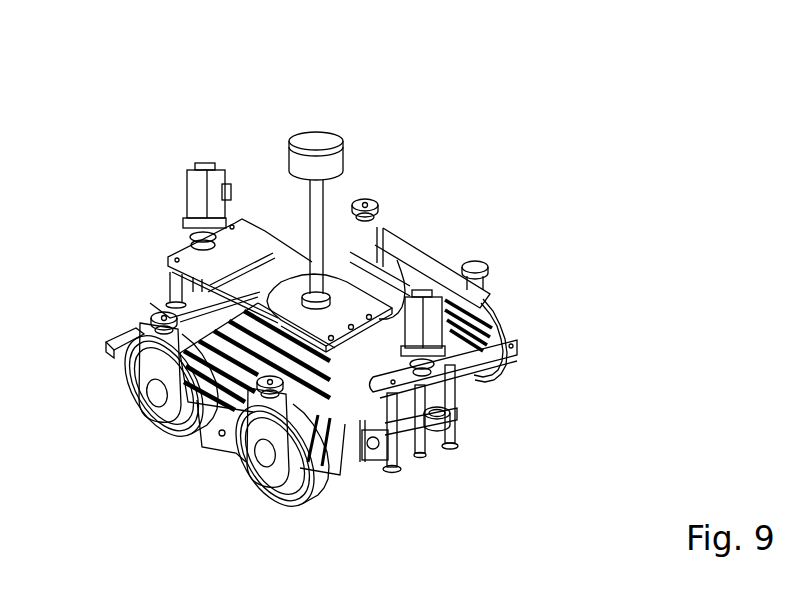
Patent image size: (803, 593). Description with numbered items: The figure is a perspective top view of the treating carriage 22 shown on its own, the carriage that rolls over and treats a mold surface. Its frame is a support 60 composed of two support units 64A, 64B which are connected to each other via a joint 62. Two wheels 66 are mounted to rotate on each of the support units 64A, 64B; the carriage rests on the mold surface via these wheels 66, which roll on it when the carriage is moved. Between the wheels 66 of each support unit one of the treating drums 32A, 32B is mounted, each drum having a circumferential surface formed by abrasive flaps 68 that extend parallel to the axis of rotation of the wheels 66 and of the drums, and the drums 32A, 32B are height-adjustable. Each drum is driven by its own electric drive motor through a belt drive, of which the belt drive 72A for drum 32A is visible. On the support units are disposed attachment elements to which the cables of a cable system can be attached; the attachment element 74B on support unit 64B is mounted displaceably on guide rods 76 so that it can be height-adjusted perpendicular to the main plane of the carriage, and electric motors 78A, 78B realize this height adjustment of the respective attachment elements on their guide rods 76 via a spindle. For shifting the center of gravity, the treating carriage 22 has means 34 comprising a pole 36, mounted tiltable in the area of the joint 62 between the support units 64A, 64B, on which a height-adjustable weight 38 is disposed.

The treating carriage 22 is at (363, 289).
The treating drum 32A is at (223, 335).
The treating drum 32B is at (500, 338).
The means for shifting the center of gravity 34 is at (333, 128).
The pole 36 is at (312, 213).
The height-adjustable weight 38 is at (316, 140).
The support 60 is at (487, 287).
The joint 62 is at (303, 300).
The support unit 64A is at (340, 218).
The support unit 64B is at (452, 293).
The wheel 66 is at (132, 400).
The abrasive flaps 68 is at (325, 408).
The belt drive 72A is at (212, 433).
The attachment element 74B is at (443, 425).
The guide rods 76 is at (452, 438).
The electric motor 78A is at (200, 167).
The electric motor 78B is at (425, 295).